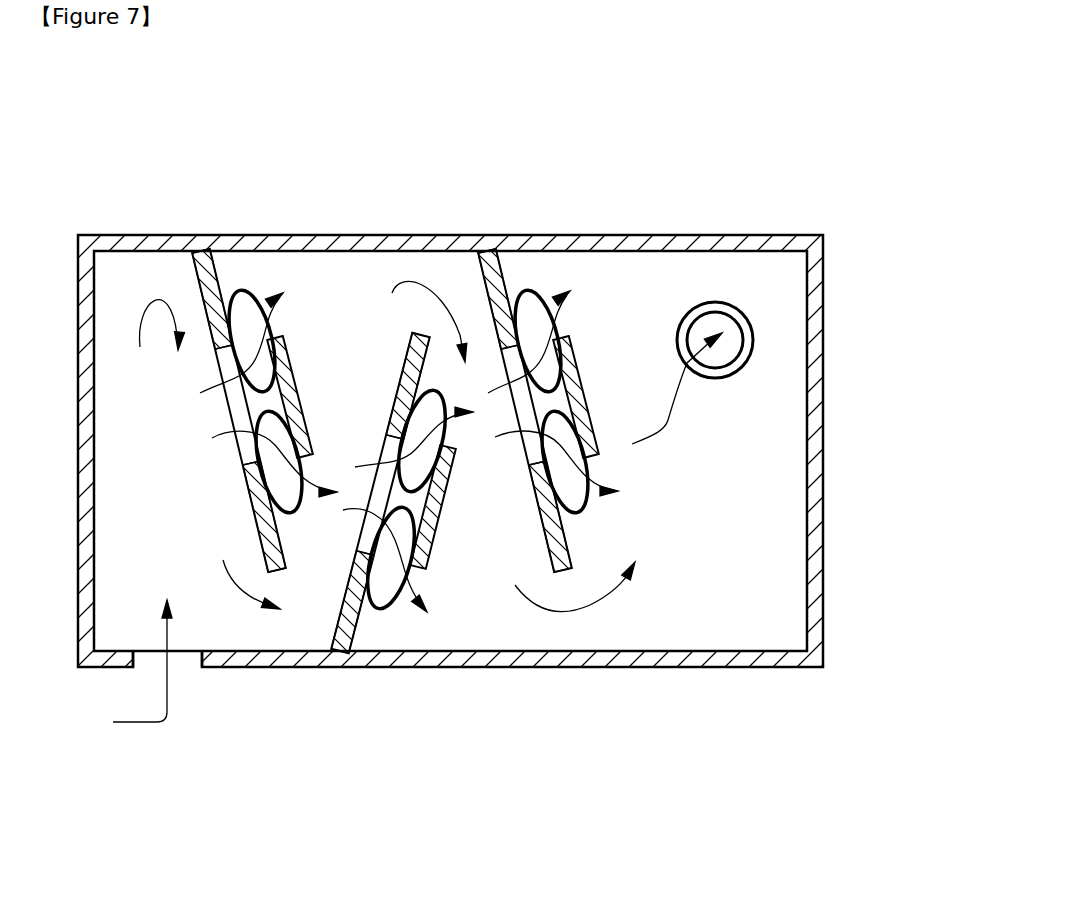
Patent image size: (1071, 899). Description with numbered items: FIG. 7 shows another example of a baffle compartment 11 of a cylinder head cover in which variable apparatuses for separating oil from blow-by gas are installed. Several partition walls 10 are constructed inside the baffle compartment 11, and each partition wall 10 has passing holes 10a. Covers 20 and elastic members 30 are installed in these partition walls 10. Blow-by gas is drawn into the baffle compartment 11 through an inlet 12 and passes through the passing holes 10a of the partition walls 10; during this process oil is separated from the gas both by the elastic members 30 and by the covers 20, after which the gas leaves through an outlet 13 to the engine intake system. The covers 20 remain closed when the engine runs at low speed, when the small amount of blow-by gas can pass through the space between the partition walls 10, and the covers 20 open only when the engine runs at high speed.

The partition wall 10 is at (263, 518).
The passing hole 10a is at (233, 355).
The baffle compartment 11 is at (143, 235).
The inlet 12 is at (188, 668).
The outlet 13 is at (735, 343).
The cover 20 is at (286, 338).
The elastic member 30 is at (243, 298).